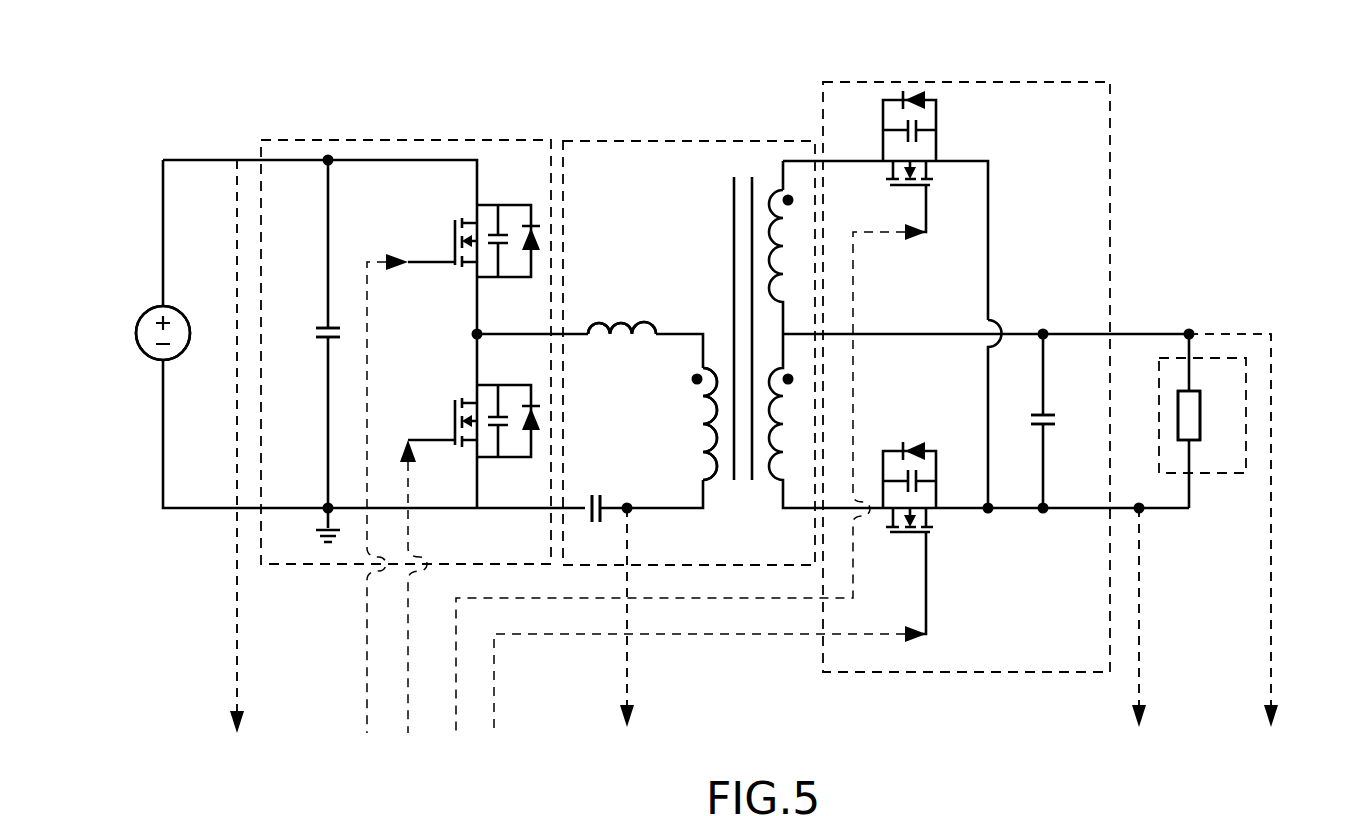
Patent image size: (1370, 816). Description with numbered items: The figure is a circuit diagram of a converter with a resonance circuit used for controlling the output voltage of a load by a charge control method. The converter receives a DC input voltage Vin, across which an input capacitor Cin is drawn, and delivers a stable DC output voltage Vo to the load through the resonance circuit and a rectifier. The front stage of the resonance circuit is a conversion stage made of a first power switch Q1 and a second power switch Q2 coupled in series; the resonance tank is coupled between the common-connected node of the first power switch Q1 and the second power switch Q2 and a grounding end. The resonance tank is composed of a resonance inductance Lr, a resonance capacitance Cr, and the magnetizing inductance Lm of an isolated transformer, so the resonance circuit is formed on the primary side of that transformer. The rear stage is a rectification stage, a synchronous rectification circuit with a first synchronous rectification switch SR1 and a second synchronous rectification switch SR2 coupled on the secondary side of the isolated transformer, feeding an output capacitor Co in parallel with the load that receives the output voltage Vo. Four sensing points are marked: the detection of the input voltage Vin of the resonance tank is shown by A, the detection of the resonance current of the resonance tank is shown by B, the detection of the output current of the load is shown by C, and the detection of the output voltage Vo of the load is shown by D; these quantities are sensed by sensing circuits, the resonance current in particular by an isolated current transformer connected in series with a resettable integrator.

The input voltage Vin is at (143, 333).
The input capacitor Cin is at (311, 335).
The first power switch Q1 is at (471, 241).
The second power switch Q2 is at (471, 421).
The resonance inductance Lr is at (622, 313).
The magnetizing inductance Lm is at (691, 424).
The resonance capacitance Cr is at (595, 494).
The first synchronous rectification switch SR1 is at (906, 162).
The second synchronous rectification switch SR2 is at (906, 512).
The output capacitor Co is at (1062, 422).
The output voltage Vo is at (1204, 415).
The detection of the input voltage A is at (205, 435).
The detection of the resonance current B is at (663, 621).
The detection of the output current C is at (1175, 620).
The detection of the output voltage D is at (1263, 533).